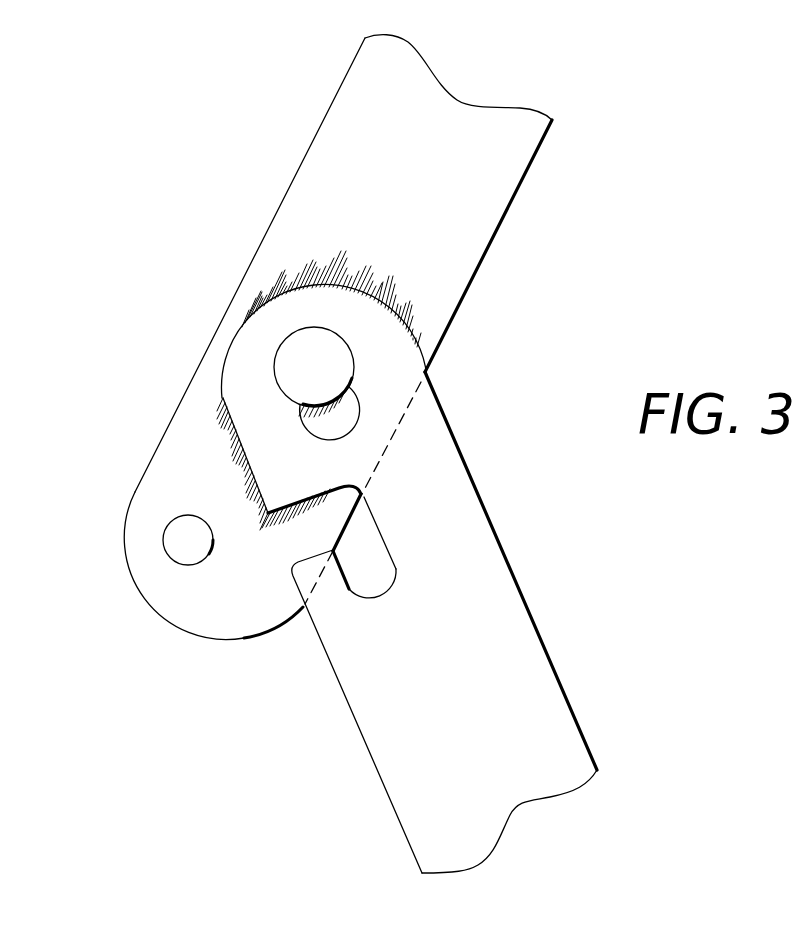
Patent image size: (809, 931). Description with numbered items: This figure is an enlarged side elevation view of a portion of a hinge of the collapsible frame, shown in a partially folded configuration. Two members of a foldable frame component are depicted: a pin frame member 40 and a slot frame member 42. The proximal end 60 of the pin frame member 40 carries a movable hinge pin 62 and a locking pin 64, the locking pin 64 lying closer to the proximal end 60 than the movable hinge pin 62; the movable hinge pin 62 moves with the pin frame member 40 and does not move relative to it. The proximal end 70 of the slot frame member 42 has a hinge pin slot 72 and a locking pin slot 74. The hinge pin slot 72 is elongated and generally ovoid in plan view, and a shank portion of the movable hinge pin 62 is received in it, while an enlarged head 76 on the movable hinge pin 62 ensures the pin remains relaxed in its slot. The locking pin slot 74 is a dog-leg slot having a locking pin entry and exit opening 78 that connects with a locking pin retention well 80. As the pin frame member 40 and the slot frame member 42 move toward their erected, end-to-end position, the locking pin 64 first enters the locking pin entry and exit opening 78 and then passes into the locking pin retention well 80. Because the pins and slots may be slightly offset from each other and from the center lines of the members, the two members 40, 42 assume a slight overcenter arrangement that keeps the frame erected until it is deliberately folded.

The pin frame member 40 is at (533, 222).
The slot frame member 42 is at (562, 632).
The proximal end 60 is at (188, 593).
The movable hinge pin 62 is at (357, 370).
The locking pin 64 is at (183, 535).
The proximal end 70 is at (263, 337).
The hinge pin slot 72 is at (360, 403).
The locking pin slot 74 is at (390, 545).
The enlarged head 76 is at (340, 353).
The locking pin entry and exit opening 78 is at (304, 556).
The locking pin retention well 80 is at (385, 607).